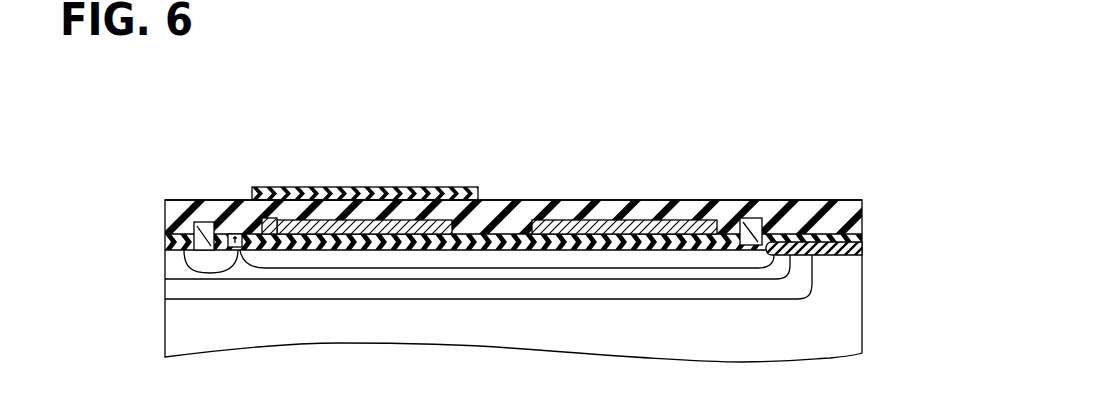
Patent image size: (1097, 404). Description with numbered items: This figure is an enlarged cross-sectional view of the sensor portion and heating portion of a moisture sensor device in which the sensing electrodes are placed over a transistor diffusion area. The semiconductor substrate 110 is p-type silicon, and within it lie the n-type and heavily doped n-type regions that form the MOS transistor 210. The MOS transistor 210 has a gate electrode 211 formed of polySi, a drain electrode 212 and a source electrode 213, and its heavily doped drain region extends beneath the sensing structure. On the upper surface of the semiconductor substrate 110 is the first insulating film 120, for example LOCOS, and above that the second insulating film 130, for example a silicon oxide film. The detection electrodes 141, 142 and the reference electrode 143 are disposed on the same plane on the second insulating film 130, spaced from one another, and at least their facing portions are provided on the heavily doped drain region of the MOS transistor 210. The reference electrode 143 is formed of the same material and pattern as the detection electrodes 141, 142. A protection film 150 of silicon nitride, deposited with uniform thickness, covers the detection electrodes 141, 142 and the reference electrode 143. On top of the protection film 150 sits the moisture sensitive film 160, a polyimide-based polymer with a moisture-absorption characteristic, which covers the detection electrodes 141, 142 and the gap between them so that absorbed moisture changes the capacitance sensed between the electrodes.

The semiconductor substrate 110 is at (850, 296).
The first insulating film 120 is at (862, 248).
The second insulating film 130 is at (866, 238).
The detection electrode 141 is at (272, 218).
The detection electrode 142 is at (438, 220).
The reference electrode 143 is at (534, 220).
The protection film 150 is at (863, 205).
The moisture sensitive film 160 is at (372, 187).
The MOS transistor 210 is at (515, 230).
The gate electrode 211 is at (234, 232).
The drain electrode 212 is at (752, 218).
The source electrode 213 is at (207, 222).